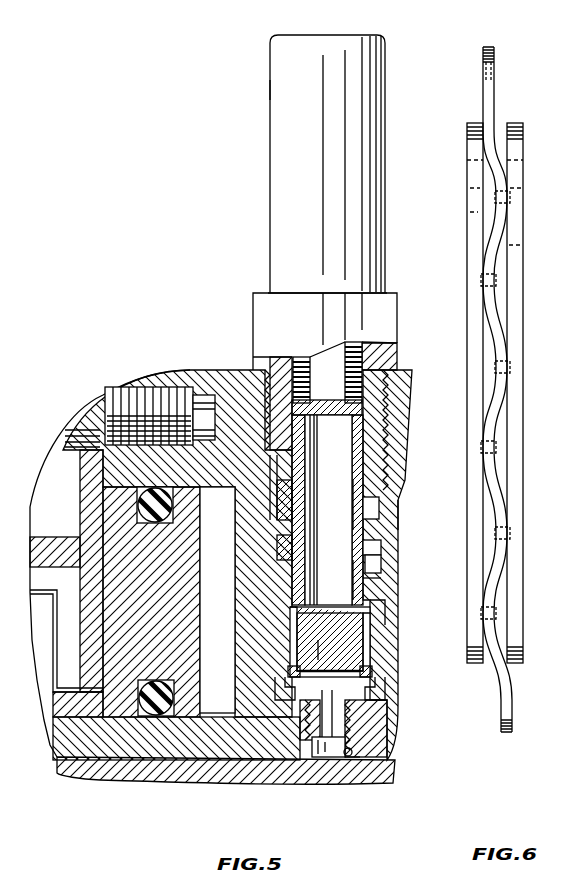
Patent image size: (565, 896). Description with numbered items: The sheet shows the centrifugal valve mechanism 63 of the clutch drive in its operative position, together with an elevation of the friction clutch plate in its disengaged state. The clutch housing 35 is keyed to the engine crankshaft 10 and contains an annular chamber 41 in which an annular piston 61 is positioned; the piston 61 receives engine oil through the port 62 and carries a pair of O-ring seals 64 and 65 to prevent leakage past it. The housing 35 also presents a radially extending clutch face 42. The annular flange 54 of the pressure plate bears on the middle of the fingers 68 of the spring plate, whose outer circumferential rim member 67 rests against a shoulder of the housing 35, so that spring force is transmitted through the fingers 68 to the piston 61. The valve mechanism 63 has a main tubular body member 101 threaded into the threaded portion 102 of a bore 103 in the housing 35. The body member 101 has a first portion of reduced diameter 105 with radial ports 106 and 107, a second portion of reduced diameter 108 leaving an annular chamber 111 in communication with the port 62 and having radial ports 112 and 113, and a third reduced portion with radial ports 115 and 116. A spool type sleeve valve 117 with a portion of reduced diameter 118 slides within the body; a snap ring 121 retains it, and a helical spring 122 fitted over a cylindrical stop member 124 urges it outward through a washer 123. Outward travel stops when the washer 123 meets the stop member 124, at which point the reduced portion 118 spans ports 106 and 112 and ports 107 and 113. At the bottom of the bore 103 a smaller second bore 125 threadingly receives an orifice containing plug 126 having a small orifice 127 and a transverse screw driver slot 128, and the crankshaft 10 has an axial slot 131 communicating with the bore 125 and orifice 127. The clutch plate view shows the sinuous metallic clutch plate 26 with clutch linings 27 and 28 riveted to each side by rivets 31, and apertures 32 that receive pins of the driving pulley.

In FIG. 5, the engine crankshaft 10 is at (262, 770).
In FIG. 6, the sinuous metallic clutch plate 26 is at (494, 58).
In FIG. 6, the clutch lining 27 is at (468, 208).
In FIG. 6, the clutch lining 28 is at (520, 428).
In FIG. 6, the rivets 31 is at (478, 284).
In FIG. 6, the apertures 32 is at (498, 71).
In FIG. 5, the clutch housing 35 is at (228, 377).
In FIG. 5, the annular chamber 41 is at (224, 590).
In FIG. 5, the clutch face 42 is at (125, 407).
In FIG. 5, the annular flange 54 is at (46, 547).
In FIG. 5, the annular piston 61 is at (190, 622).
In FIG. 5, the port 62 is at (265, 567).
In FIG. 5, the centrifugal valve mechanism 63 is at (261, 95).
In FIG. 5, the O-ring seal 64 is at (170, 700).
In FIG. 5, the O-ring seal 65 is at (175, 497).
In FIG. 5, the outer circumferential rim member 67 is at (88, 458).
In FIG. 5, the fingers 68 is at (88, 592).
In FIG. 5, the main tubular body member 101 is at (270, 192).
In FIG. 5, the threaded portion 102 is at (388, 437).
In FIG. 5, the bore 103 is at (383, 553).
In FIG. 5, the first portion of reduced diameter 105 is at (253, 307).
In FIG. 5, the radial port 106 is at (419, 515).
In FIG. 5, the radial port 107 is at (290, 497).
In FIG. 5, the second portion of reduced diameter 108 is at (383, 570).
In FIG. 5, the annular chamber 111 is at (383, 578).
In FIG. 5, the radial port 112 is at (373, 553).
In FIG. 5, the radial port 113 is at (292, 566).
In FIG. 5, the radial port 115 is at (390, 613).
In FIG. 5, the radial port 116 is at (300, 621).
In FIG. 5, the spool type sleeve valve 117 is at (360, 605).
In FIG. 5, the portion of reduced diameter 118 is at (360, 508).
In FIG. 5, the snap ring 121 is at (346, 672).
In FIG. 5, the helical spring 122 is at (300, 357).
In FIG. 5, the washer 123 is at (355, 416).
In FIG. 5, the cylindrical stop member 124 is at (308, 410).
In FIG. 5, the second bore 125 is at (360, 760).
In FIG. 5, the orifice containing plug 126 is at (352, 725).
In FIG. 5, the orifice 127 is at (336, 752).
In FIG. 5, the screw driver slot 128 is at (358, 684).
In FIG. 5, the axial slot 131 is at (360, 757).